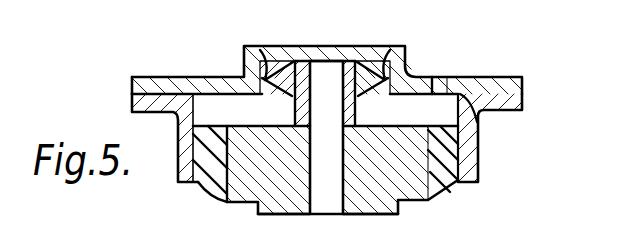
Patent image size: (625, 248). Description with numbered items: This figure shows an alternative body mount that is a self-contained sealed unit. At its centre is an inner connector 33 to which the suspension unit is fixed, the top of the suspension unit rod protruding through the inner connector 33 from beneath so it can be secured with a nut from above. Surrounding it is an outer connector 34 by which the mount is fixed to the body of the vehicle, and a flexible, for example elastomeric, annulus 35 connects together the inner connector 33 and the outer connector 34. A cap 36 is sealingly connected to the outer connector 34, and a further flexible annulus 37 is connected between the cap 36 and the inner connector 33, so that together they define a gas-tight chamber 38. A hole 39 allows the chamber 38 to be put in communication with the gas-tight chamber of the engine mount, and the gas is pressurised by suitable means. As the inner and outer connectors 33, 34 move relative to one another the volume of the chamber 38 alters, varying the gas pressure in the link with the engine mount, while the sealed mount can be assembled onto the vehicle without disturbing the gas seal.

The inner connector 33 is at (258, 183).
The outer connector 34 is at (467, 171).
The flexible annulus 35 is at (441, 183).
The cap 36 is at (490, 76).
The further flexible annulus 37 is at (375, 72).
The chamber 38 is at (433, 112).
The hole 39 is at (437, 76).